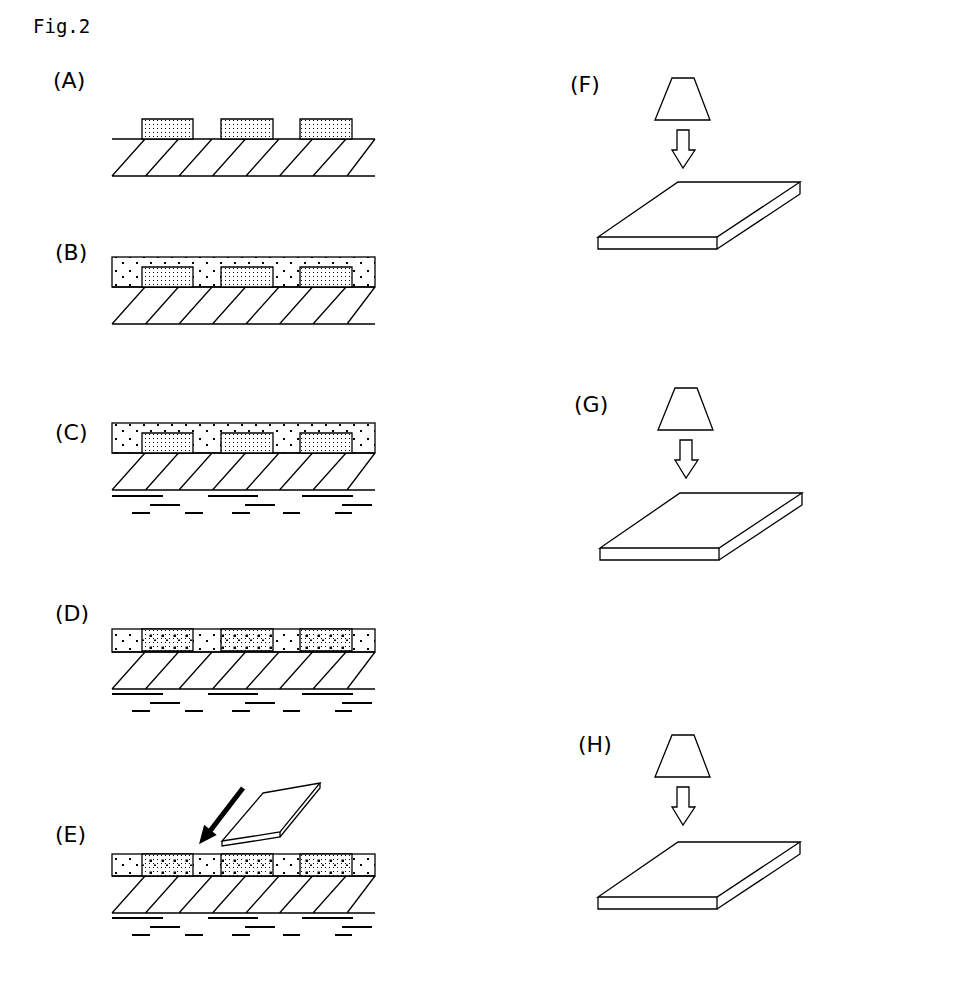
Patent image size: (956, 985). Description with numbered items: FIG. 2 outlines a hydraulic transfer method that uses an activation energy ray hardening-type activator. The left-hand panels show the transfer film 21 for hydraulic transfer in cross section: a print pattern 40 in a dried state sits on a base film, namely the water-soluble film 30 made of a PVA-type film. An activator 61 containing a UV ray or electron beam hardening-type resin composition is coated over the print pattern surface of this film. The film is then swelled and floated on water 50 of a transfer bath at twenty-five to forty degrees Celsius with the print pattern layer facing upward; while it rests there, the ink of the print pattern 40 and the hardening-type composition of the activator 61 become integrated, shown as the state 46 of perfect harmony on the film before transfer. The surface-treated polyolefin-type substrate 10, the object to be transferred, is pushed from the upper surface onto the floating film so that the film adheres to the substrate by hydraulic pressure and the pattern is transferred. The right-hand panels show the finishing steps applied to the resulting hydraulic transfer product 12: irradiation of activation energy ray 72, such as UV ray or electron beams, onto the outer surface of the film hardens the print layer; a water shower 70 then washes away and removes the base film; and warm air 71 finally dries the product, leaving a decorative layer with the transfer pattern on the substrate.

The polyolefin-type substrate 10 is at (300, 822).
The hydraulic transfer product 12 is at (733, 240).
The transfer film for hydraulic transfer 21 is at (367, 125).
The water-soluble film 30 is at (373, 164).
The print pattern 40 is at (243, 118).
The state of perfect harmony of ink and activator 46 is at (231, 629).
The water 50 is at (344, 507).
The activation energy ray hardening-type activator 61 is at (374, 275).
The water shower 70 is at (712, 457).
The warm air 71 is at (708, 806).
The irradiation of activation energy ray 72 is at (708, 145).